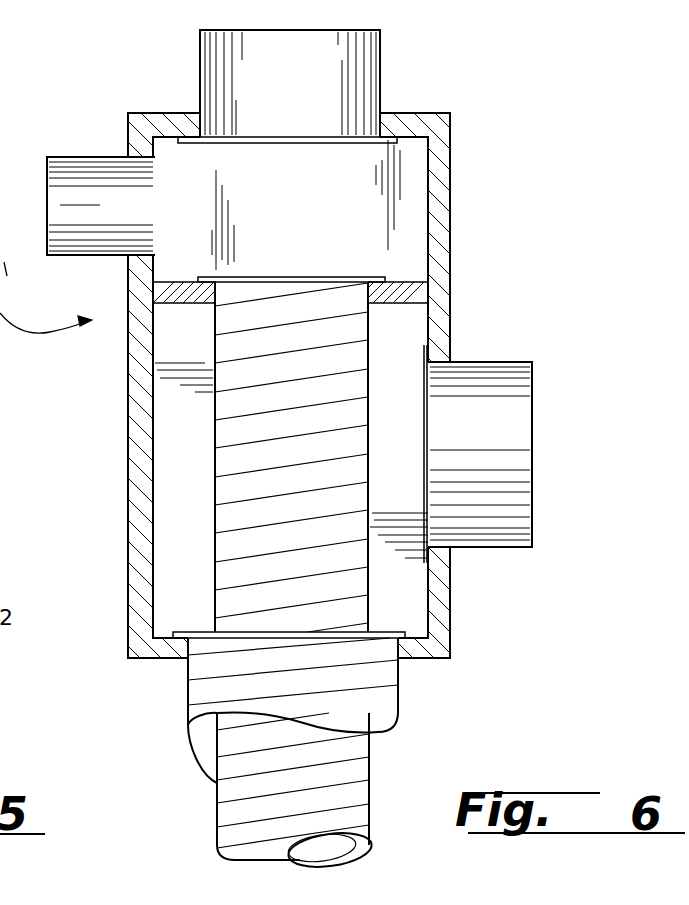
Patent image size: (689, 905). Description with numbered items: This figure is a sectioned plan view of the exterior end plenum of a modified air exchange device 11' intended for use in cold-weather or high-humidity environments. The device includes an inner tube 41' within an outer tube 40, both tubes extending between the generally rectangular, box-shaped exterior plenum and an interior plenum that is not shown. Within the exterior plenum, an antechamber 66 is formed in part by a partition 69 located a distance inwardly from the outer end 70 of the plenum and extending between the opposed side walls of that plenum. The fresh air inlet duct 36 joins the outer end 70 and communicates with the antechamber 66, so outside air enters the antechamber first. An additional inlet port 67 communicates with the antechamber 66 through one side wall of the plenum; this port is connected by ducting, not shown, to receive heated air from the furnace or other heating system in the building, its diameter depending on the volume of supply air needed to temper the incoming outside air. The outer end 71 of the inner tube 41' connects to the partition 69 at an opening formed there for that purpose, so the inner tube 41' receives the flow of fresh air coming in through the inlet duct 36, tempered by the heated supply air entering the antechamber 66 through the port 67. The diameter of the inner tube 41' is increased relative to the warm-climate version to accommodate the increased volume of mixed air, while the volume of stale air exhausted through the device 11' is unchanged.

The fresh air inlet duct 36 is at (380, 37).
The outer end of the plenum 70 is at (403, 113).
The antechamber 66 is at (413, 190).
The partition 69 is at (405, 280).
The outer end of the inner tube 71 is at (308, 277).
The inlet port 67 is at (72, 176).
The inner tube 41' is at (265, 577).
The outer tube 40 is at (398, 684).
The air exchange device 11' is at (86, 722).